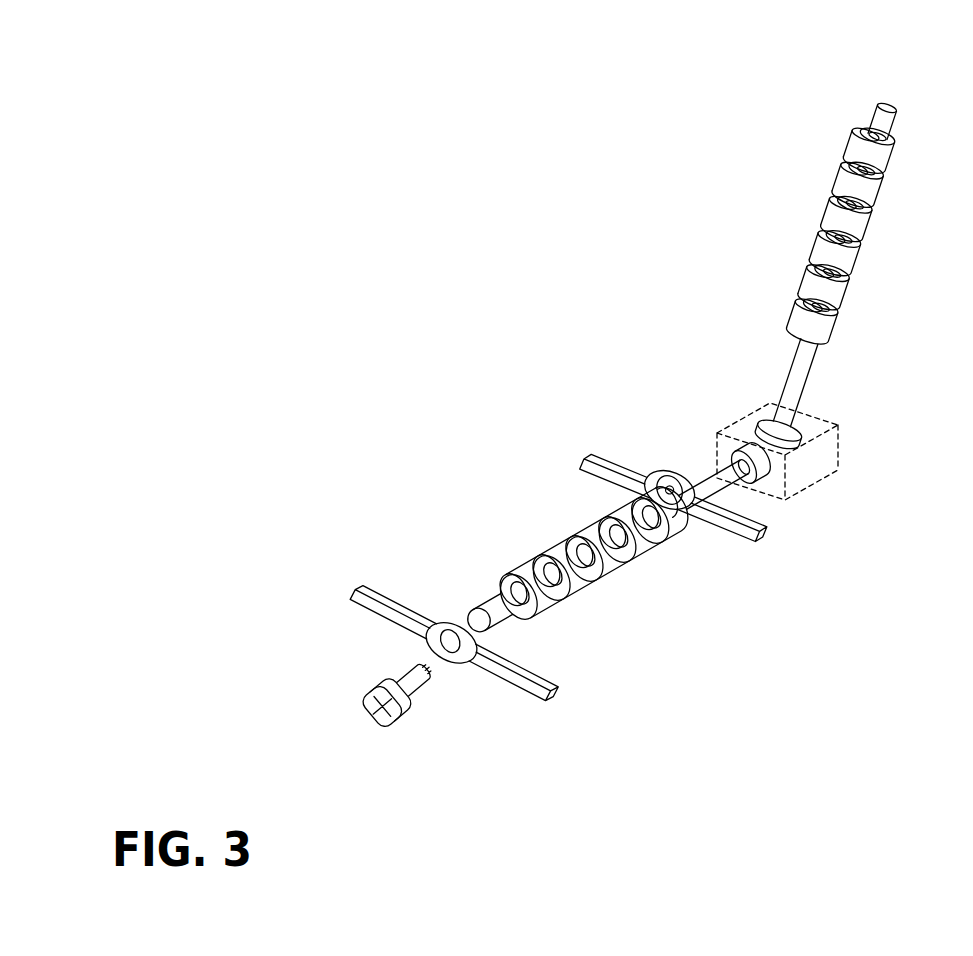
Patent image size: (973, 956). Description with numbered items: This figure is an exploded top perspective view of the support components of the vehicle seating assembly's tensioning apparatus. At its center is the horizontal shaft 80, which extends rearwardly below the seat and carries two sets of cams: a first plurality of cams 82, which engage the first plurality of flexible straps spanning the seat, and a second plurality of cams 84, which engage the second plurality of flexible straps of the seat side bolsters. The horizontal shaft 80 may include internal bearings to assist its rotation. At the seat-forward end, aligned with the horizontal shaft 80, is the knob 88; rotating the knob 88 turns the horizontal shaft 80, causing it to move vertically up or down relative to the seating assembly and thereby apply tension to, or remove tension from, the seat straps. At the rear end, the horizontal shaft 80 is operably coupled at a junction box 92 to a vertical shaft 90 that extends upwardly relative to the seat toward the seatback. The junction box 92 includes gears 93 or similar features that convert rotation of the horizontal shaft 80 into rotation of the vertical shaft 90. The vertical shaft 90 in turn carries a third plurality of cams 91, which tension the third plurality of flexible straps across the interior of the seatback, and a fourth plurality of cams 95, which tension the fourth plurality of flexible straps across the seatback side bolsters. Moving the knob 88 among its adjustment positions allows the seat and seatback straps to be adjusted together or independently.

The horizontal shaft 80 is at (795, 371).
The first plurality of cams 82 is at (490, 592).
The second plurality of cams 84 is at (557, 609).
The knob 88 is at (372, 702).
The vertical shaft 90 is at (890, 122).
The third plurality of cams 91 is at (888, 157).
The junction box 92 is at (842, 430).
The gears 93 is at (733, 447).
The fourth plurality of cams 95 is at (855, 171).